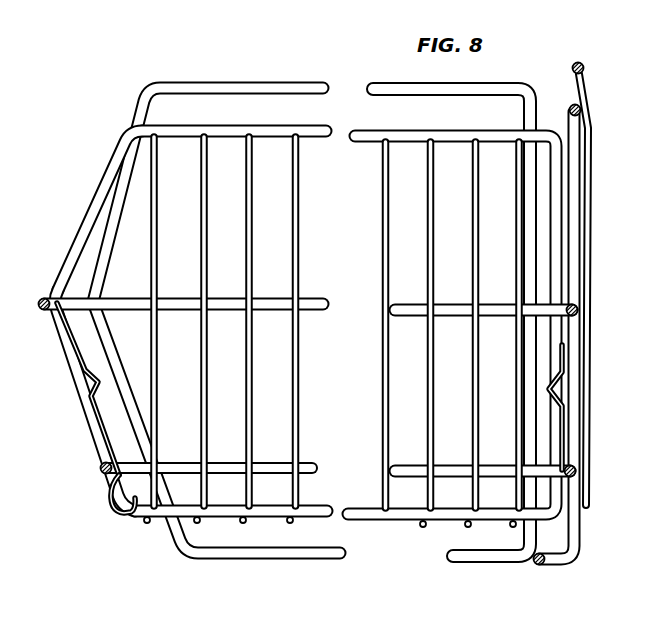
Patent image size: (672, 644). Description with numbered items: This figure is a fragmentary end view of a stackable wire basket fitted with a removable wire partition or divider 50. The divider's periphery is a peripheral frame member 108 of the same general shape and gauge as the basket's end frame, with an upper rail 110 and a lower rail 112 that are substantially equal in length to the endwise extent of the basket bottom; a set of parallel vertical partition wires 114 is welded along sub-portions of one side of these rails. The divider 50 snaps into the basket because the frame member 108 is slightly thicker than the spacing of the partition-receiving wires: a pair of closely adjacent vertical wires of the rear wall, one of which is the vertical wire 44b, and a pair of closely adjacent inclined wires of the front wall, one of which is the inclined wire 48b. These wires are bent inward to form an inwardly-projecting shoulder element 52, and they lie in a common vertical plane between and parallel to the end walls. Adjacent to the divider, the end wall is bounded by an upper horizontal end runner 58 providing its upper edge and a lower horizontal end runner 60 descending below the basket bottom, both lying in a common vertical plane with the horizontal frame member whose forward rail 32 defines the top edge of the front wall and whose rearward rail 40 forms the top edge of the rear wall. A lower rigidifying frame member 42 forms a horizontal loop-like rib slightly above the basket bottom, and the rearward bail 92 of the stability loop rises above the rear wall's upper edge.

The upper rail 110 is at (187, 120).
The upper horizontal end runner 58 is at (278, 56).
The wire partition or divider 50 is at (316, 143).
The peripheral frame member 108 is at (93, 193).
The forward rail 32 is at (48, 312).
The shoulder element 52 is at (96, 389).
The inclined wire 48b is at (103, 432).
The lower horizontal end runner 60 is at (218, 560).
The lower rigidifying frame member 42 is at (303, 463).
The vertical partition wires 114 is at (299, 427).
The lower rail 112 is at (326, 519).
The vertical wire 44b is at (561, 350).
The rearward rail 40 is at (571, 104).
The rearward bail 92 is at (586, 63).